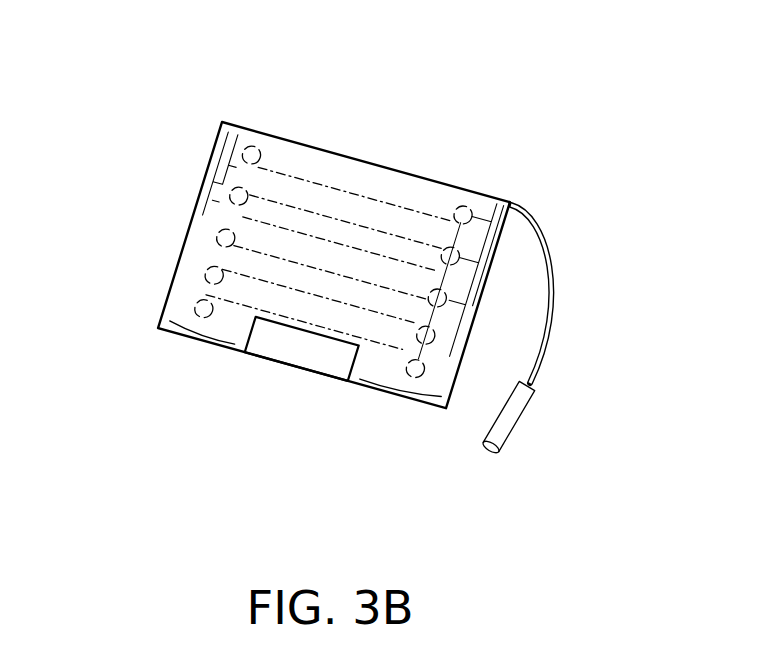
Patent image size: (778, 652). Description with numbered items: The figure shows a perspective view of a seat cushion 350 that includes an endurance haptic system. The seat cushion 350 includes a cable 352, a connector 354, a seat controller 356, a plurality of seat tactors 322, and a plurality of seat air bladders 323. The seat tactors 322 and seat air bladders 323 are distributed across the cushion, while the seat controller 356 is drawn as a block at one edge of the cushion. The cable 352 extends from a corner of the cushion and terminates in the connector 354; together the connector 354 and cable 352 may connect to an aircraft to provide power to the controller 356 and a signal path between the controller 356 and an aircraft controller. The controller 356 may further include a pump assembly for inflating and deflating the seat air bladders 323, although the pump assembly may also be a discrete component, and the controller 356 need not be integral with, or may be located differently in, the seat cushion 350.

The seat cushion 350 is at (185, 146).
The seat tactors 322 is at (193, 300).
The seat air bladders 323 is at (204, 232).
The cable 352 is at (553, 328).
The connector 354 is at (503, 430).
The seat controller 356 is at (302, 349).